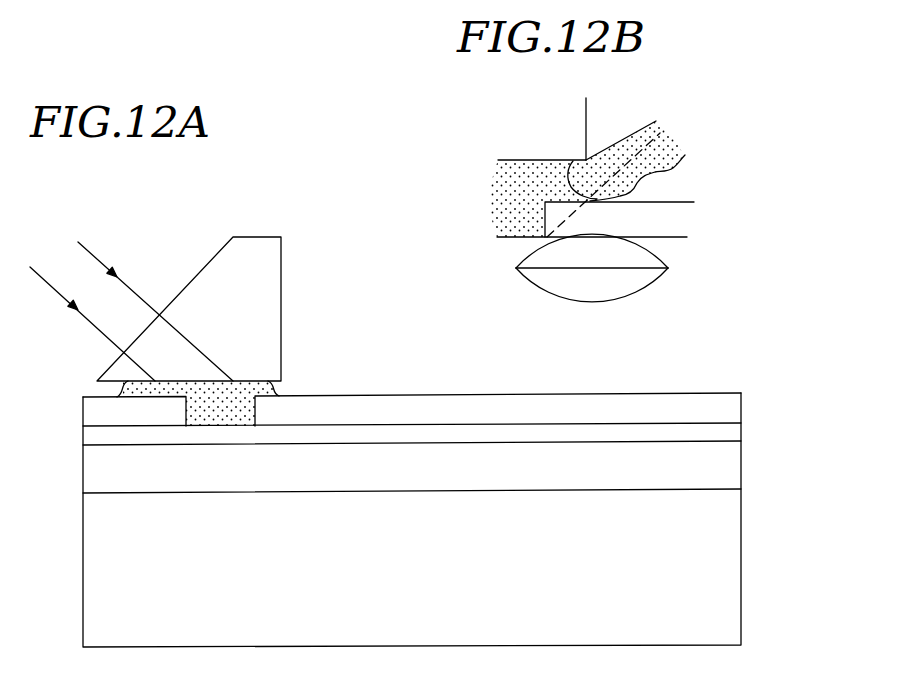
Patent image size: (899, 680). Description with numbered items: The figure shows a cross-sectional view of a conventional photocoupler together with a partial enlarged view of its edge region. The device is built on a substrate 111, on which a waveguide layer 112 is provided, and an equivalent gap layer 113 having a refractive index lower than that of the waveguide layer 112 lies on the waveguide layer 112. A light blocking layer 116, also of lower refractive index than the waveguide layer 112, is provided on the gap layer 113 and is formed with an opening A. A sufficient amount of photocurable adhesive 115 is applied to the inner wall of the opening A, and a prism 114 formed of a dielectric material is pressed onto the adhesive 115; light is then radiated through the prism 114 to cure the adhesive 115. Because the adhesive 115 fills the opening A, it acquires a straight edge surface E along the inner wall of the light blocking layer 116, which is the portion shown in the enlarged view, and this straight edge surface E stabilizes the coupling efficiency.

In FIG. 12A, the substrate 111 is at (735, 575).
In FIG. 12A, the waveguide layer 112 is at (735, 475).
In FIG. 12B, the waveguide layer 112 is at (550, 283).
In FIG. 12A, the equivalent gap layer 113 is at (735, 433).
In FIG. 12B, the equivalent gap layer 113 is at (668, 257).
In FIG. 12A, the prism 114 is at (275, 310).
In FIG. 12B, the prism 114 is at (525, 140).
In FIG. 12A, the photocurable adhesive 115 is at (123, 392).
In FIG. 12B, the photocurable adhesive 115 is at (507, 207).
In FIG. 12A, the light blocking layer 116 is at (733, 412).
In FIG. 12B, the light blocking layer 116 is at (655, 210).
In FIG. 12A, the edge surface E is at (260, 411).
In FIG. 12B, the edge surface E is at (582, 224).
In FIG. 12A, the opening A is at (218, 428).